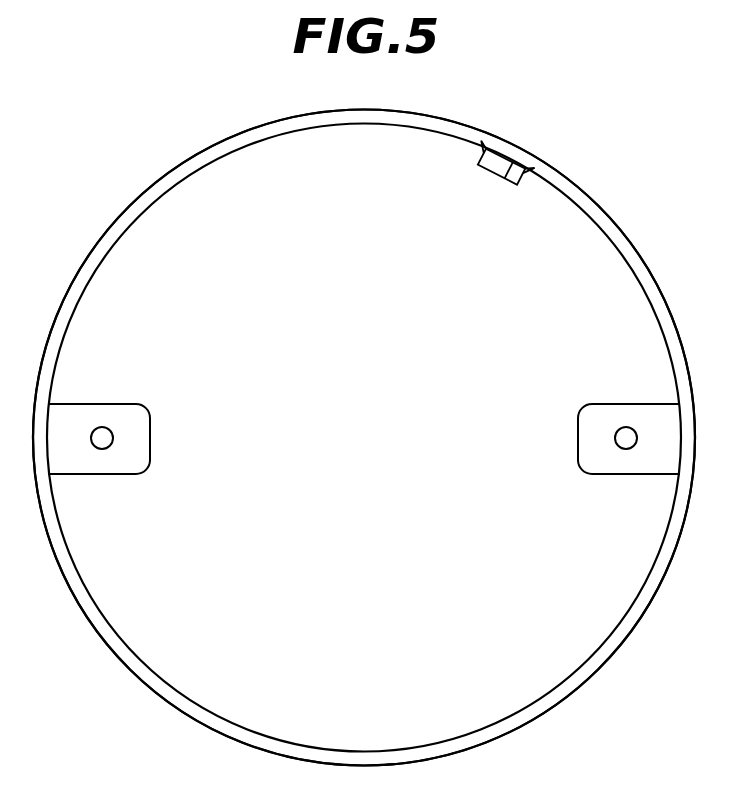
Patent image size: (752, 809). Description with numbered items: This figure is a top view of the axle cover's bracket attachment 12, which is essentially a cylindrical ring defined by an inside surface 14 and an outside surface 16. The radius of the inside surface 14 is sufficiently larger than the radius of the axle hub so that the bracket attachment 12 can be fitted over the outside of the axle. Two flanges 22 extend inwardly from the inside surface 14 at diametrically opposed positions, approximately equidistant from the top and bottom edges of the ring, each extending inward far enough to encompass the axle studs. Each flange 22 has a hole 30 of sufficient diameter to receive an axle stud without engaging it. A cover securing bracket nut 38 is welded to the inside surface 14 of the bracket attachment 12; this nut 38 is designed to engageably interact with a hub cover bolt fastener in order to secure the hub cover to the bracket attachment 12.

The bracket attachment 12 is at (120, 190).
The inside surface 14 is at (222, 157).
The outside surface 16 is at (643, 260).
The flange 22 is at (115, 475).
The hole 30 is at (102, 432).
The cover securing bracket nut 38 is at (495, 187).